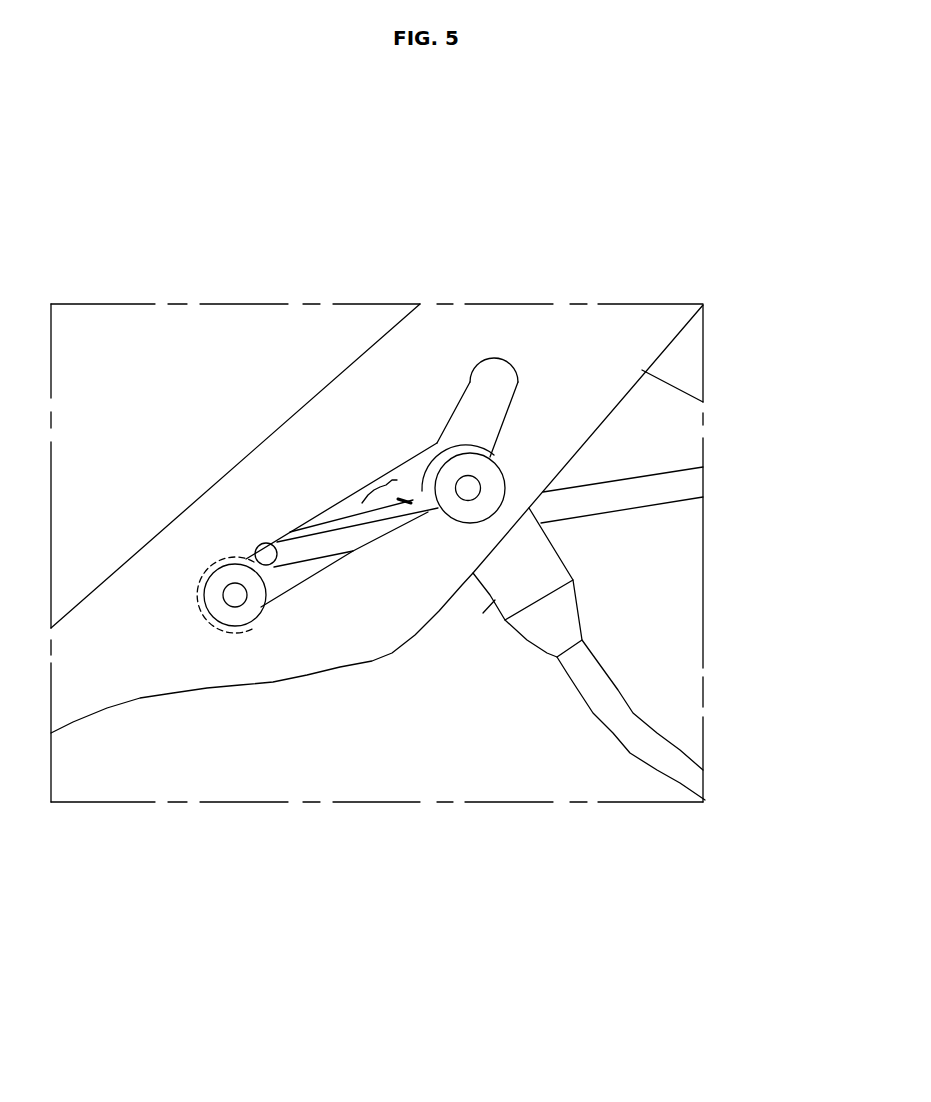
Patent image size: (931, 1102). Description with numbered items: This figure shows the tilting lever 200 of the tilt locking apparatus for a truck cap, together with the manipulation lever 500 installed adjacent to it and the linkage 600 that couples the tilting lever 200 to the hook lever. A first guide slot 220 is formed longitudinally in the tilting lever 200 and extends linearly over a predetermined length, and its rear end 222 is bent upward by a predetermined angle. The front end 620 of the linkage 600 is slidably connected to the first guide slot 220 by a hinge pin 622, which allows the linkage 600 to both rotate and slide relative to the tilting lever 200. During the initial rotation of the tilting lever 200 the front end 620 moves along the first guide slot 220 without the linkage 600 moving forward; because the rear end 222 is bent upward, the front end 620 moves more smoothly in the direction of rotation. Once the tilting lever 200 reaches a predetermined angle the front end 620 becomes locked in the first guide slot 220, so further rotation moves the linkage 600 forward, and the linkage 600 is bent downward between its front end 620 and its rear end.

The tilting lever 200 is at (303, 453).
The first guide slot 220 is at (379, 485).
The rear end of the first guide slot 222 is at (482, 367).
The hinge pin 622 is at (470, 487).
The manipulation lever 500 is at (596, 511).
The linkage 600 is at (648, 752).
The front end of the linkage 620 is at (483, 613).